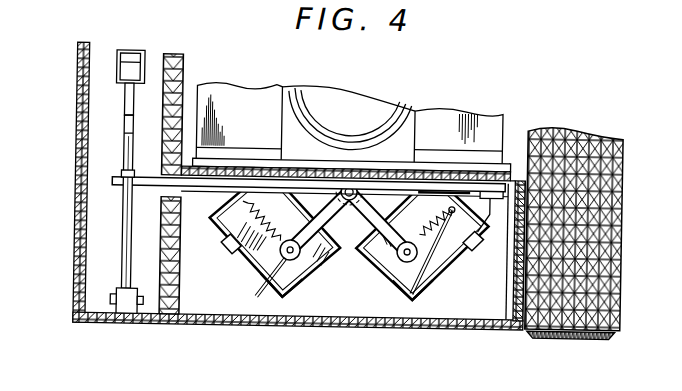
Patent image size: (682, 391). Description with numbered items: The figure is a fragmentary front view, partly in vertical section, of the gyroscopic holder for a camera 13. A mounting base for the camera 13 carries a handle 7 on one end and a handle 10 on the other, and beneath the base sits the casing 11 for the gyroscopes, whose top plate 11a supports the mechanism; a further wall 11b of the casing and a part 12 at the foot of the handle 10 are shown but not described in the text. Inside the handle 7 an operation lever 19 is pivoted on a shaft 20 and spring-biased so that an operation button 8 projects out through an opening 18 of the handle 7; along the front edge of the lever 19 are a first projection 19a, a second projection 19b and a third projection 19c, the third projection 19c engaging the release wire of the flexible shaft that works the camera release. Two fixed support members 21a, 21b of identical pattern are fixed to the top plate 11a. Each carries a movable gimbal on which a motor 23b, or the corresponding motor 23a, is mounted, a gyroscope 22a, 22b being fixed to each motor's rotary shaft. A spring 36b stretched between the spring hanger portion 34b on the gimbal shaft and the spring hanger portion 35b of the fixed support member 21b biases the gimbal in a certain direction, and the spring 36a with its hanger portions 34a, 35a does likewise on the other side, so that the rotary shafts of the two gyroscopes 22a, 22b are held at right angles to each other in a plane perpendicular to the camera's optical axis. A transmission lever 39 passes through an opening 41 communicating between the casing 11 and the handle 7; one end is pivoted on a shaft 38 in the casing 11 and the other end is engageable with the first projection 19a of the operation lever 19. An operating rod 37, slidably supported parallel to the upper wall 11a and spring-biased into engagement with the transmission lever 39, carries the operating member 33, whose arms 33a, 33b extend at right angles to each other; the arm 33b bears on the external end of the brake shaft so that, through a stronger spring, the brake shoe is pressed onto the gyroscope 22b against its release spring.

The handle 7 is at (76, 64).
The operation button 8 is at (123, 76).
The handle 10 is at (608, 192).
The casing 11 is at (505, 318).
The top plate 11a is at (248, 161).
The housing bottom wall 11b is at (345, 318).
The base flange 12 is at (572, 335).
The camera 13 is at (413, 110).
The opening 18 is at (137, 56).
The operation lever 19 is at (123, 110).
The first projection 19a is at (123, 176).
The second projection 19b is at (123, 130).
The third projection 19c is at (118, 54).
The shaft 20 is at (118, 318).
The fixed support member 21a is at (438, 262).
The fixed support member 21b is at (210, 220).
The gyroscope 22a is at (411, 300).
The gyroscope 22b is at (283, 303).
The stop block 23a is at (484, 248).
The motor 23b is at (222, 247).
The operating member 33 is at (322, 202).
The arm 33a is at (376, 262).
The arm 33b is at (315, 264).
The link 34a is at (445, 261).
The spring hanger portion 34b is at (268, 265).
The spring 35a is at (436, 215).
The spring hanger portion 35b is at (248, 214).
The spring 36a is at (445, 250).
The spring 36b is at (252, 252).
The operating rod 37 is at (350, 184).
The shaft 38 is at (490, 188).
The transmission lever 39 is at (114, 190).
The opening 41 is at (162, 197).